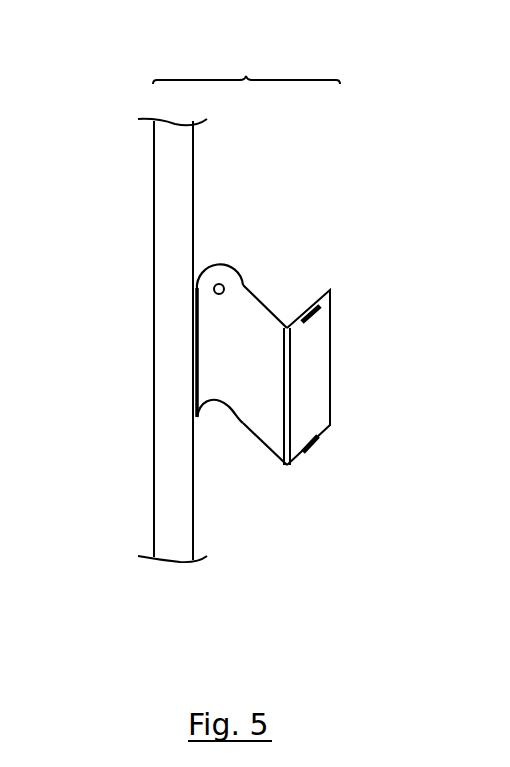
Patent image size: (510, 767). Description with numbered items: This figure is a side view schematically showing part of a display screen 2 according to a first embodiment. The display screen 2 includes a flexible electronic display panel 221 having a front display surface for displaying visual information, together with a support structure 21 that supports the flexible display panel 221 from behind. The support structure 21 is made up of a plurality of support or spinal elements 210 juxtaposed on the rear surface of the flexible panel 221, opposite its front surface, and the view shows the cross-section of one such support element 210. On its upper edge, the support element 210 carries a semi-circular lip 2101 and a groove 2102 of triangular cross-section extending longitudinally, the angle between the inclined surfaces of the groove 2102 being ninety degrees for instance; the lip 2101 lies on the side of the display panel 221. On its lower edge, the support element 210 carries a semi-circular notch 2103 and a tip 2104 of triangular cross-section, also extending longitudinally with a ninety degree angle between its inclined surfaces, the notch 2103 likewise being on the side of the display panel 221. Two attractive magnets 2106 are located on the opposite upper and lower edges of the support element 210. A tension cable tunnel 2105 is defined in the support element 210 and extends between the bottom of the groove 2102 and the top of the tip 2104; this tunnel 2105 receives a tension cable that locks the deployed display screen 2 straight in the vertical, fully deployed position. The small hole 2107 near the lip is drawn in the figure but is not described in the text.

The display screen 2 is at (246, 66).
The support structure 21 is at (331, 406).
The support element 210 is at (208, 366).
The flexible electronic display panel 221 is at (154, 173).
The semi-circular lip 2101 is at (218, 266).
The groove 2102 is at (287, 326).
The semi-circular notch 2103 is at (218, 413).
The tip 2104 is at (283, 468).
The tension cable tunnel 2105 is at (288, 466).
The attractive magnet 2106 is at (306, 318).
The positioning hole 2107 is at (224, 287).